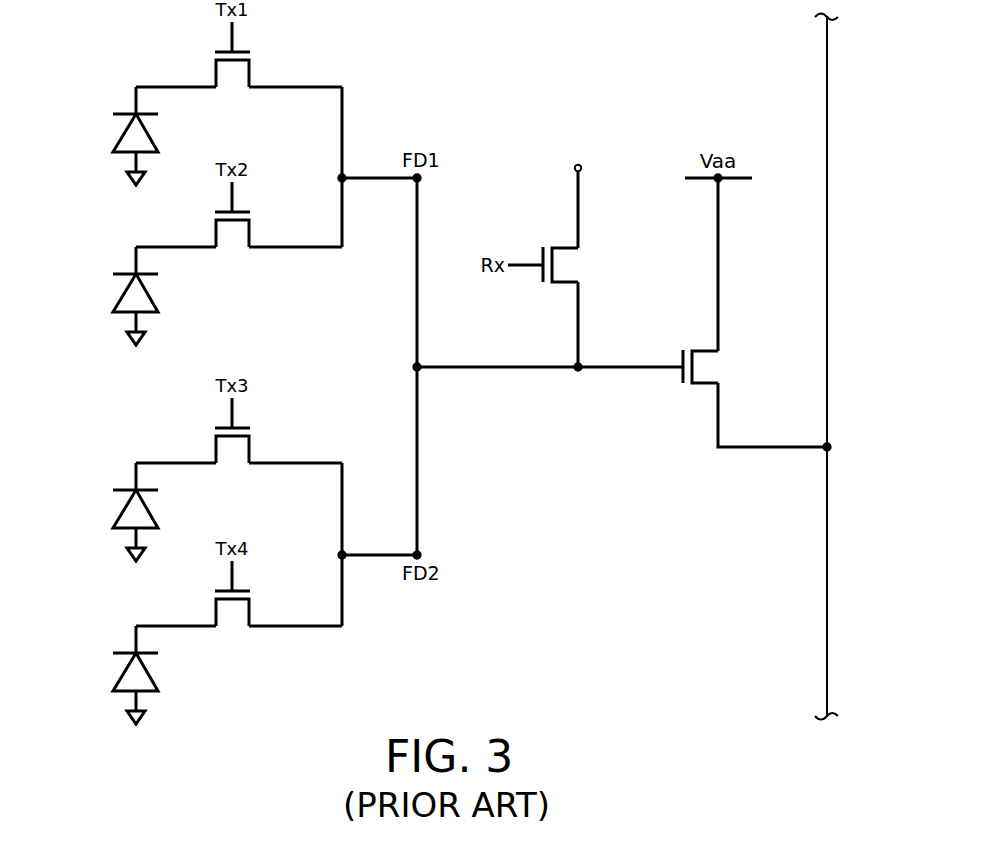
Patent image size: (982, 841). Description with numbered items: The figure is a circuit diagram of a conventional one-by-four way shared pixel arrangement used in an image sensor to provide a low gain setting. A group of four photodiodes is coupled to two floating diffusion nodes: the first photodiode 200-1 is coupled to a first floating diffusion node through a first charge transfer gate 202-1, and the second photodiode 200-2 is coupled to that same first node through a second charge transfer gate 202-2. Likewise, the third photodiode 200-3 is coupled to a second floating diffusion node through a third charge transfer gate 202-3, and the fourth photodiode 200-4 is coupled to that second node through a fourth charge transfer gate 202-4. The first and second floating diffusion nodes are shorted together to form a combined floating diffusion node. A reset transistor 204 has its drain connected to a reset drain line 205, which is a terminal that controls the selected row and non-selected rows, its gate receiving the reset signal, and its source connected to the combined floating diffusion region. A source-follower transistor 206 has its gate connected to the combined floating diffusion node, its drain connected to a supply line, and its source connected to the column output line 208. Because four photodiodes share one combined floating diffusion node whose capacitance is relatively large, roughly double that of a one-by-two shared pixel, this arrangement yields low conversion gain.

The first photodiode 200-1 is at (136, 138).
The second photodiode 200-2 is at (136, 300).
The third photodiode 200-3 is at (136, 515).
The fourth photodiode 200-4 is at (136, 677).
The first charge transfer gate 202-1 is at (231, 80).
The second charge transfer gate 202-2 is at (231, 240).
The third charge transfer gate 202-3 is at (231, 456).
The fourth charge transfer gate 202-4 is at (231, 619).
The reset transistor 204 is at (563, 279).
The reset drain line 205 is at (574, 166).
The source-follower transistor 206 is at (700, 379).
The column output line 208 is at (826, 82).